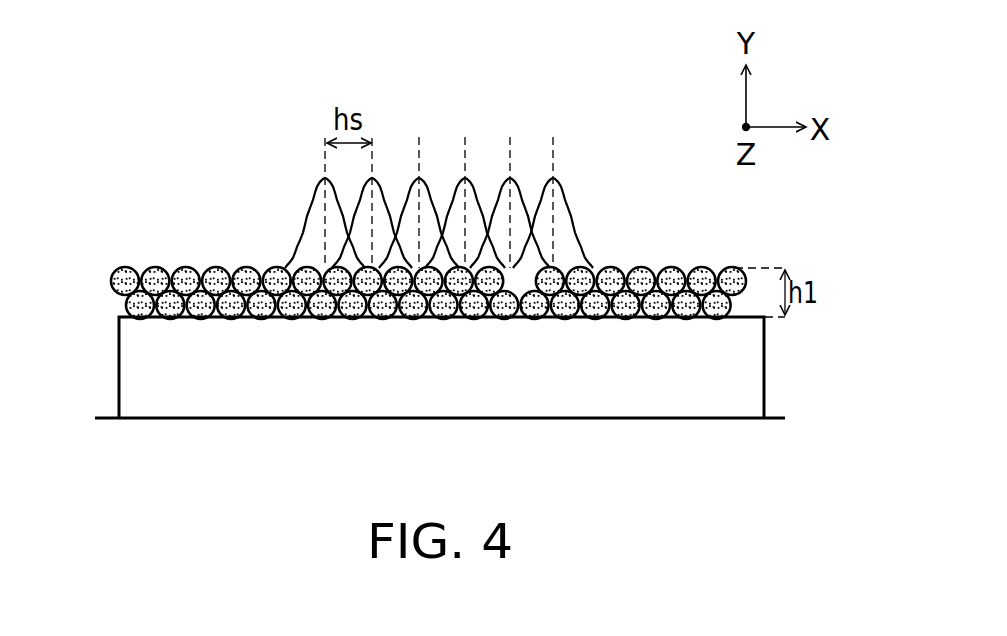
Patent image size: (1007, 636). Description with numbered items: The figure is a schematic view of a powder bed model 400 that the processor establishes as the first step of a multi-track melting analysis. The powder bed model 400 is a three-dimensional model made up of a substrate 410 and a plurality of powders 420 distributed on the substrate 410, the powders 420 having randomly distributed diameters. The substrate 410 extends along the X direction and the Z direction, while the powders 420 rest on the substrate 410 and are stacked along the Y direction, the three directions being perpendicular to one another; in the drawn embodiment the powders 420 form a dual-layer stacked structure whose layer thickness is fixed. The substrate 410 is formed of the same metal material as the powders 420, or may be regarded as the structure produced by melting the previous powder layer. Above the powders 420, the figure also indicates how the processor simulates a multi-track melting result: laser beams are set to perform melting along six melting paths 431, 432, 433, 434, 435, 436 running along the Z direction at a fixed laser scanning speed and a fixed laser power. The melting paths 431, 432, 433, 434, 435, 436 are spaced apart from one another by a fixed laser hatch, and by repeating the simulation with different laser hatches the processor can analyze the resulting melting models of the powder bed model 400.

The powder bed model 400 is at (415, 334).
The substrate 410 is at (137, 368).
The powders 420 is at (110, 276).
The melting path 431 is at (311, 199).
The melting path 432 is at (380, 178).
The melting path 433 is at (428, 182).
The melting path 434 is at (472, 180).
The melting path 435 is at (515, 183).
The melting path 436 is at (558, 182).